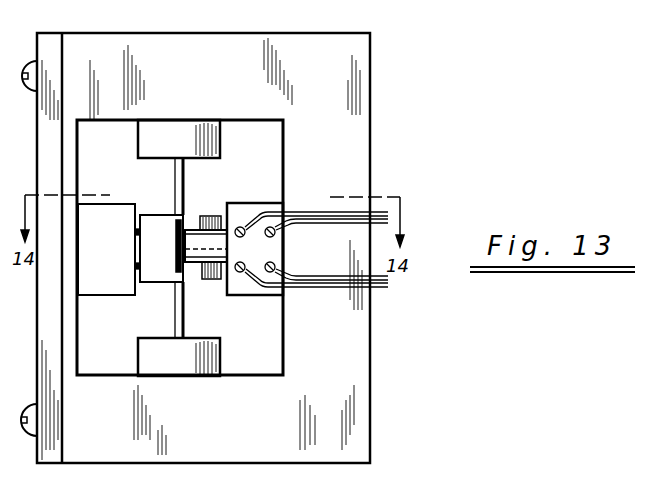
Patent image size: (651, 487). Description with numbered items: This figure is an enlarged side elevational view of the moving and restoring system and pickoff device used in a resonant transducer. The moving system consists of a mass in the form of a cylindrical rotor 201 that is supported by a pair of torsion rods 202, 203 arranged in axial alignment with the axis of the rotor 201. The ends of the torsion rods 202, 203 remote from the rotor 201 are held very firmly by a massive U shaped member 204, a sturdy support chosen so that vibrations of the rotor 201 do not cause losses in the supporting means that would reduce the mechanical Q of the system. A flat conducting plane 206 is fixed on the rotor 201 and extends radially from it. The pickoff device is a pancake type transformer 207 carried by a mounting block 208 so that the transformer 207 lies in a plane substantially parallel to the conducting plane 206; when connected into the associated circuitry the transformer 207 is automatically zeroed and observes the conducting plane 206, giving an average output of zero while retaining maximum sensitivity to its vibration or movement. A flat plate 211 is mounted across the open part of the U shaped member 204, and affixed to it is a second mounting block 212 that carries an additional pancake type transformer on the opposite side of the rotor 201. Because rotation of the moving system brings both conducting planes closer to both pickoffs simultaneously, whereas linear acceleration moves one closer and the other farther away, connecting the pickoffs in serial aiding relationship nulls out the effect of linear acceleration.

The cylindrical rotor 201 is at (160, 282).
The torsion rod 202 is at (182, 190).
The torsion rod 203 is at (186, 306).
The U shaped member 204 is at (358, 376).
The flat conducting plane 206 is at (177, 240).
The pancake type transformer 207 is at (190, 235).
The mounting block 208 is at (212, 272).
The flat plate 211 is at (62, 343).
The mounting block 212 is at (116, 280).